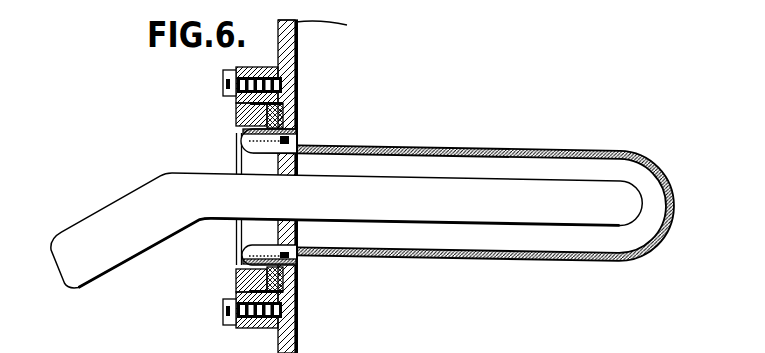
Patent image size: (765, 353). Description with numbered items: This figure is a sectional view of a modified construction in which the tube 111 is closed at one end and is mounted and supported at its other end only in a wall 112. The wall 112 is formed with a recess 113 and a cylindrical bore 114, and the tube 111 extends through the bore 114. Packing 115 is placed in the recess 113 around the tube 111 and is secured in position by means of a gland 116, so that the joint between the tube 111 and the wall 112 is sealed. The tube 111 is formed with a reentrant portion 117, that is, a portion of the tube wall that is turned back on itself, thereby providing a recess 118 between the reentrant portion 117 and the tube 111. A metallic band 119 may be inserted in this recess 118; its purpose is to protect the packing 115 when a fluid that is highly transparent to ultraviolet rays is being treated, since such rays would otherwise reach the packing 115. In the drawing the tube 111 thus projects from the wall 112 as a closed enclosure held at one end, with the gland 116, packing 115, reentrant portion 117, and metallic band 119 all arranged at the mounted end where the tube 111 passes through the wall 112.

The tube 111 is at (523, 150).
The wall 112 is at (298, 57).
The recess 113 is at (297, 108).
The cylindrical bore 114 is at (297, 116).
The packing 115 is at (243, 128).
The gland 116 is at (237, 110).
The reentrant portion 117 is at (290, 132).
The recess 118 is at (270, 248).
The metallic band 119 is at (293, 256).